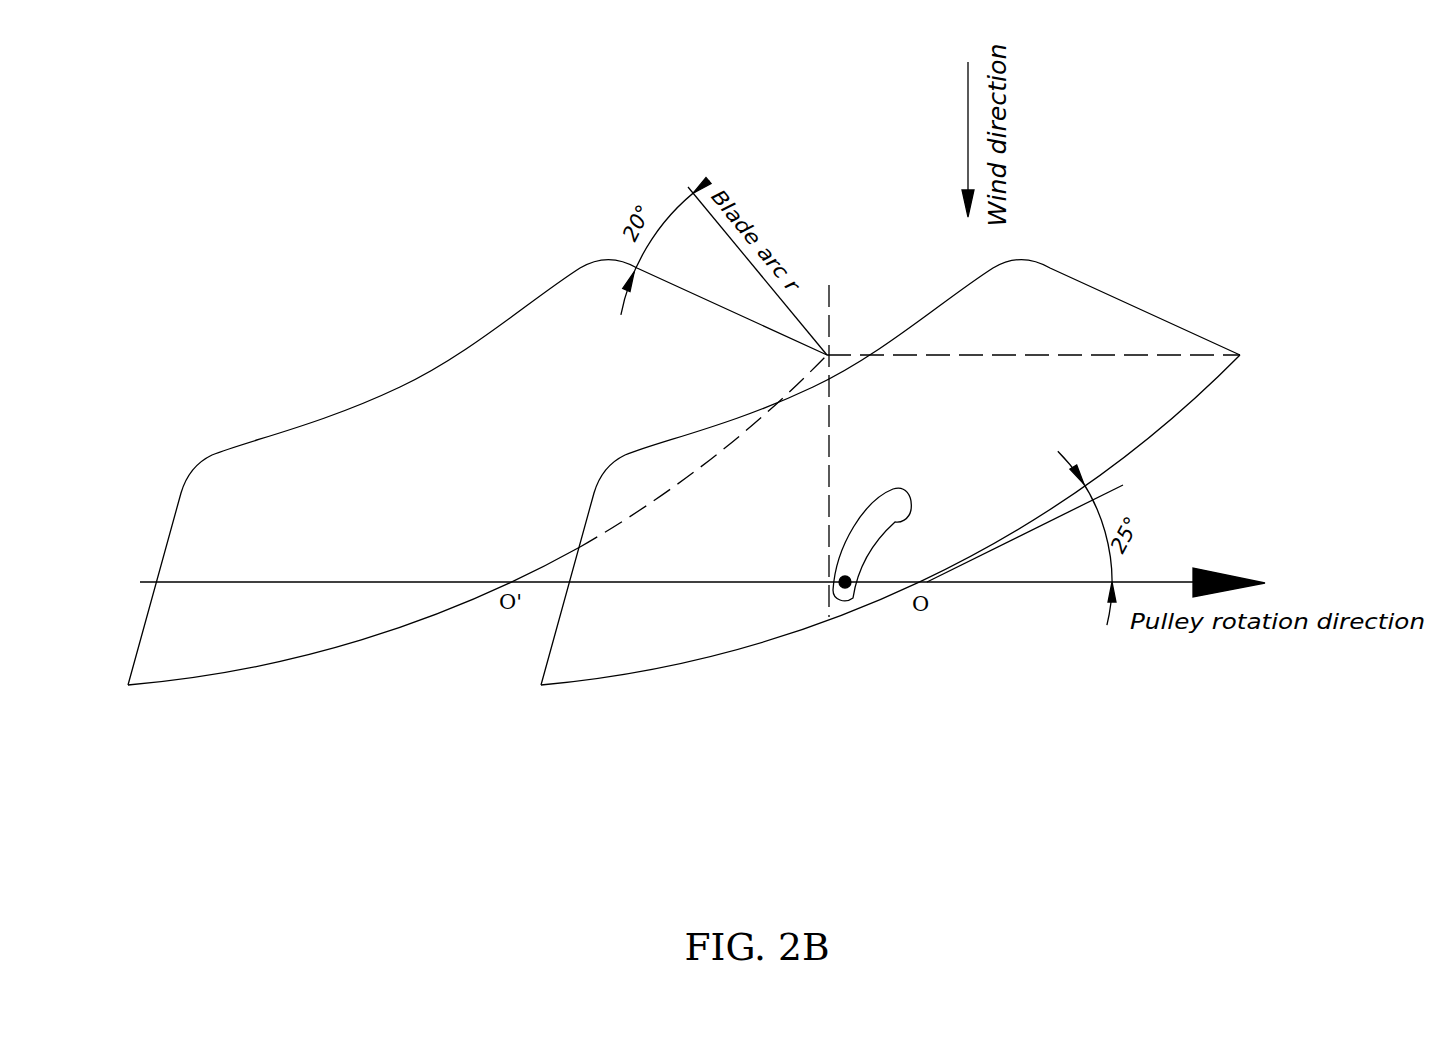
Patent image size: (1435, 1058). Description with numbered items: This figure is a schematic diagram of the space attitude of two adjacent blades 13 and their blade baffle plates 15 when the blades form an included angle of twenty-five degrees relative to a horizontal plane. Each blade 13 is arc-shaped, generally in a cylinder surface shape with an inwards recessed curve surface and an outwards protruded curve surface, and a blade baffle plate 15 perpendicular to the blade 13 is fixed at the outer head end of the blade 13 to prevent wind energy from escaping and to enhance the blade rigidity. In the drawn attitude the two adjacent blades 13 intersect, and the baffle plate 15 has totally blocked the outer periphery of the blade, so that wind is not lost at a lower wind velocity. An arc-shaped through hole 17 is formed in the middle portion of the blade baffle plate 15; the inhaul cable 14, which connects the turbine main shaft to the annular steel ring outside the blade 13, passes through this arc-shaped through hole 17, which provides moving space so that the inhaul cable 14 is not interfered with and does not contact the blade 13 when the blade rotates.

The blade 13 is at (673, 531).
The inhaul cable 14 is at (894, 645).
The blade baffle plate 15 is at (726, 571).
The arc-shaped through hole 17 is at (946, 601).